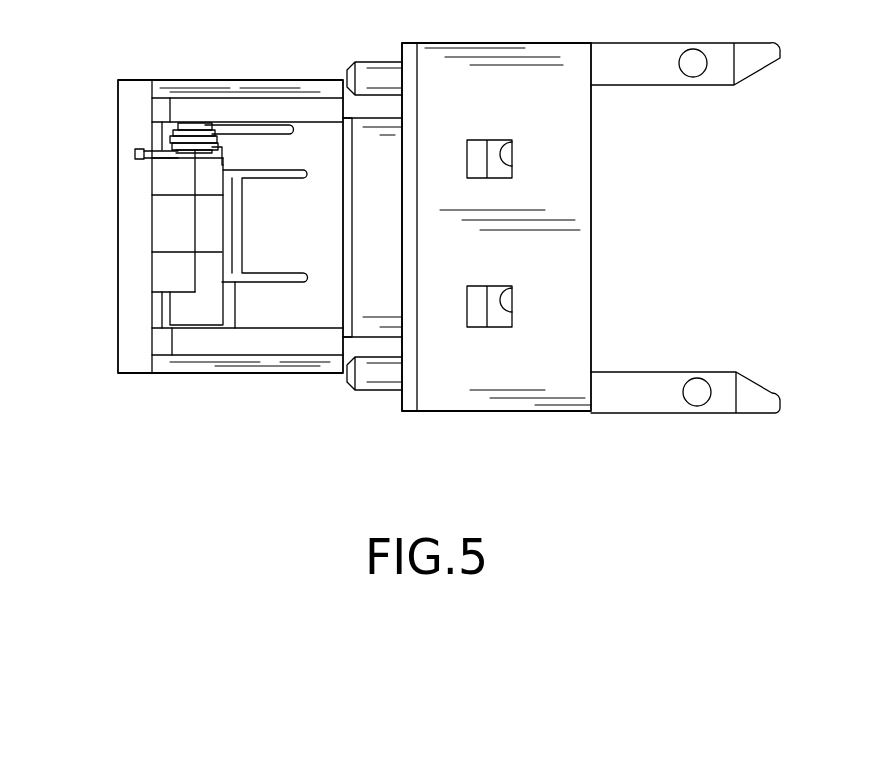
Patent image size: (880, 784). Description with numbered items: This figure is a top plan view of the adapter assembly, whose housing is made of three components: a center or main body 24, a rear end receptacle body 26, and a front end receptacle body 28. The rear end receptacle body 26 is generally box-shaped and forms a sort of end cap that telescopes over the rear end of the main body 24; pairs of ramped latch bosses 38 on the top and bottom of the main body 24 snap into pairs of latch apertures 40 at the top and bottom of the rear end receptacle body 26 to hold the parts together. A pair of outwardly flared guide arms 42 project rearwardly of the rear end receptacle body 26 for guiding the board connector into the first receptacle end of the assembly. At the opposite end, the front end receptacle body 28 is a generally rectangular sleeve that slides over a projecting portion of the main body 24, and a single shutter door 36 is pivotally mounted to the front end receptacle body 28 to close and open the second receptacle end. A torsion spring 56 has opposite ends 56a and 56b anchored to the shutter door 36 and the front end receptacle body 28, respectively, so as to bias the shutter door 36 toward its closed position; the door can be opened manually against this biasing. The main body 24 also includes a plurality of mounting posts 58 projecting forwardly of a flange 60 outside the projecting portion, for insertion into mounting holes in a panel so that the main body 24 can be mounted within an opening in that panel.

The main body 24 is at (380, 318).
The rear end receptacle body 26 is at (537, 42).
The front end receptacle body 28 is at (277, 304).
The shutter door 36 is at (145, 278).
The ramped latch bosses 38 is at (477, 165).
The latch apertures 40 is at (503, 140).
The guide arms 42 is at (647, 60).
The torsion spring 56 is at (195, 132).
The end of torsion spring 56a is at (147, 148).
The end of torsion spring 56b is at (267, 132).
The mounting posts 58 is at (367, 80).
The flange 60 is at (406, 58).